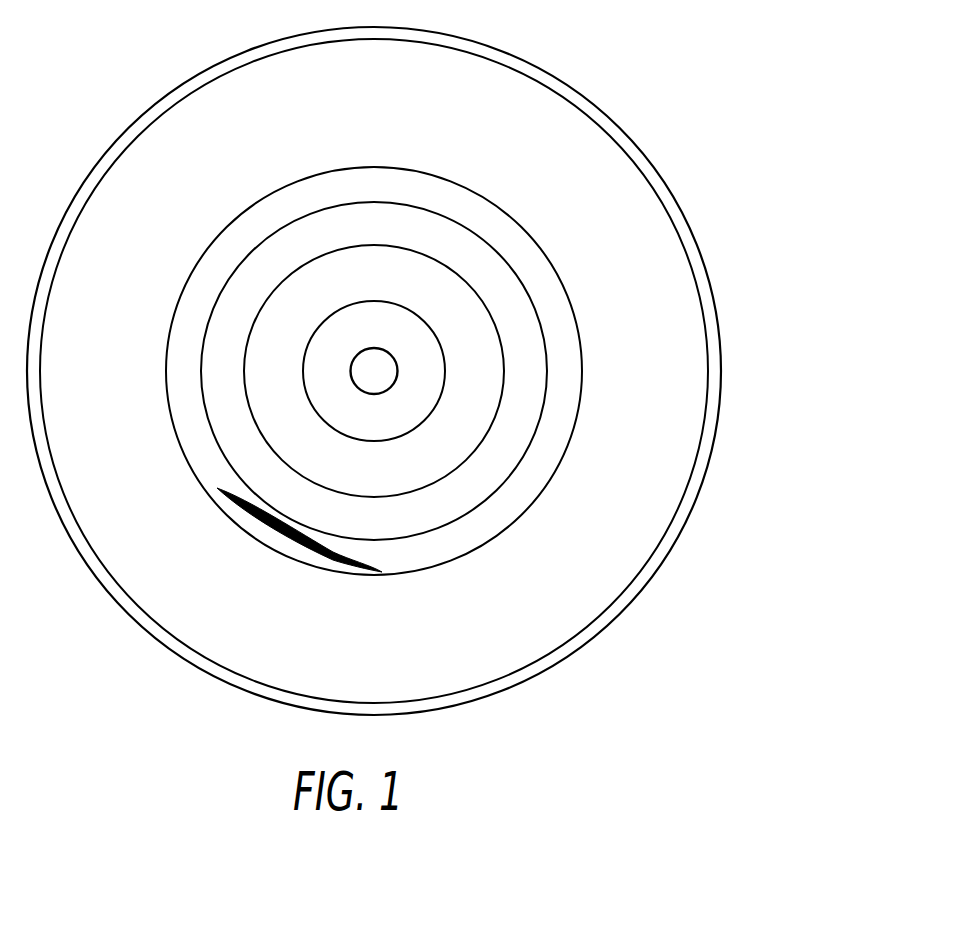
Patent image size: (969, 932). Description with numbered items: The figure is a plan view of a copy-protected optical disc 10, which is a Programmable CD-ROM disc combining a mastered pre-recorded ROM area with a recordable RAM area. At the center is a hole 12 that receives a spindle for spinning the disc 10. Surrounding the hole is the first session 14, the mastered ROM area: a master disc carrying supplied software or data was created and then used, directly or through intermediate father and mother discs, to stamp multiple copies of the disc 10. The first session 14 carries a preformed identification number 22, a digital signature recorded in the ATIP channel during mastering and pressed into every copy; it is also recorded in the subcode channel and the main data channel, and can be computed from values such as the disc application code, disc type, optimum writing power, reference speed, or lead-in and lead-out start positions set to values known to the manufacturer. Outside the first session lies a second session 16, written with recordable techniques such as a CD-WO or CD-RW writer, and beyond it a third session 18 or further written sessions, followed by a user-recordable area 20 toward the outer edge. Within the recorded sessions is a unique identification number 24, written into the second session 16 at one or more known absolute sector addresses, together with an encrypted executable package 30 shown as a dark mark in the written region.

The copy-protected optical disc 10 is at (538, 72).
The hole 12 is at (387, 365).
The first session 14 is at (488, 347).
The second session 16 is at (532, 363).
The third session 18 is at (568, 388).
The user-recordable area 20 is at (688, 440).
The preformed identification number 22 is at (312, 285).
The unique identification number 24 is at (315, 227).
The encrypted executable package 30 is at (230, 500).